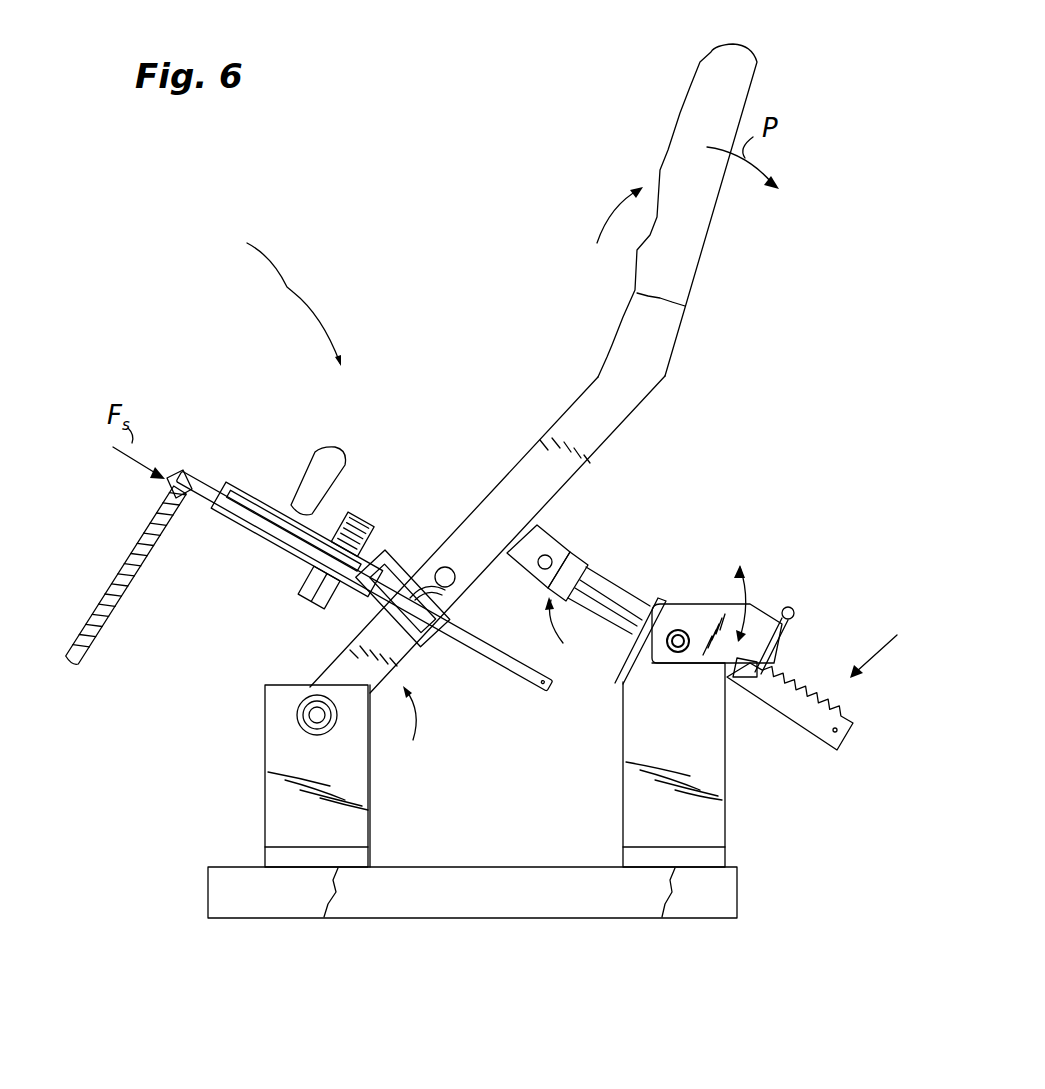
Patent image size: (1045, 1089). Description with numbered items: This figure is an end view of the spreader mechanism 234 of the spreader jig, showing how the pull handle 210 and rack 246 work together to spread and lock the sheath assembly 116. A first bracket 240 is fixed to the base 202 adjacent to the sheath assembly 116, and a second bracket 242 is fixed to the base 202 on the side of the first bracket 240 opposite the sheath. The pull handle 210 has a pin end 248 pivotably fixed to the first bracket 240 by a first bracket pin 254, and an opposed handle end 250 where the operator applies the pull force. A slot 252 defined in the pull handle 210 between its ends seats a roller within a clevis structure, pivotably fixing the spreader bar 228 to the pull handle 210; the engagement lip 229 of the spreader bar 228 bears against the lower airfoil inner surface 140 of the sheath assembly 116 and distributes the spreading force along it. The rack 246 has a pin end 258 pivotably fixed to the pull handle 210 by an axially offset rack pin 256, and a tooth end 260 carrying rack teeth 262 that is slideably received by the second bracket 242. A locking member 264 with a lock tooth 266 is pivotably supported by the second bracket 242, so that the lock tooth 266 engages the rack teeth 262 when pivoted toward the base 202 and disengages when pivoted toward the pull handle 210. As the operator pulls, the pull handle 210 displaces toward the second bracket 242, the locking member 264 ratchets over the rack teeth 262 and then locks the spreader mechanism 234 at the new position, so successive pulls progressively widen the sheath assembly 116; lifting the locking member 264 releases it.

The base 202 is at (478, 902).
The pull handle 210 is at (587, 403).
The sheath assembly 116 is at (103, 633).
The lower airfoil inner surface 140 is at (82, 625).
The spreader bar 228 is at (270, 533).
The engagement lip 229 is at (200, 480).
The spreader mechanism 234 is at (271, 295).
The first bracket 240 is at (283, 823).
The second bracket 242 is at (697, 825).
The rack 246 is at (800, 717).
The pin end 248 is at (408, 728).
The handle end 250 is at (611, 231).
The slot 252 is at (440, 570).
The first bracket pin 254 is at (300, 730).
The rack pin 256 is at (553, 553).
The pin end 258 is at (597, 605).
The tooth end 260 is at (895, 648).
The rack teeth 262 is at (779, 683).
The locking member 264 is at (690, 613).
The lock tooth 266 is at (728, 683).